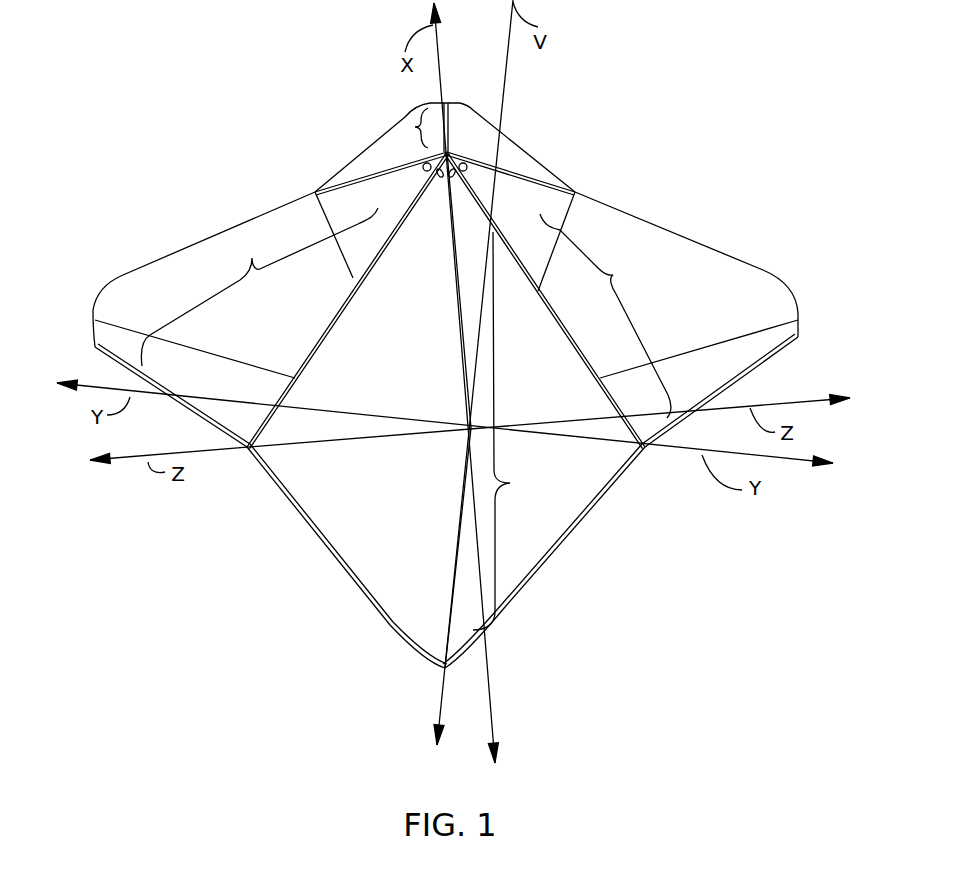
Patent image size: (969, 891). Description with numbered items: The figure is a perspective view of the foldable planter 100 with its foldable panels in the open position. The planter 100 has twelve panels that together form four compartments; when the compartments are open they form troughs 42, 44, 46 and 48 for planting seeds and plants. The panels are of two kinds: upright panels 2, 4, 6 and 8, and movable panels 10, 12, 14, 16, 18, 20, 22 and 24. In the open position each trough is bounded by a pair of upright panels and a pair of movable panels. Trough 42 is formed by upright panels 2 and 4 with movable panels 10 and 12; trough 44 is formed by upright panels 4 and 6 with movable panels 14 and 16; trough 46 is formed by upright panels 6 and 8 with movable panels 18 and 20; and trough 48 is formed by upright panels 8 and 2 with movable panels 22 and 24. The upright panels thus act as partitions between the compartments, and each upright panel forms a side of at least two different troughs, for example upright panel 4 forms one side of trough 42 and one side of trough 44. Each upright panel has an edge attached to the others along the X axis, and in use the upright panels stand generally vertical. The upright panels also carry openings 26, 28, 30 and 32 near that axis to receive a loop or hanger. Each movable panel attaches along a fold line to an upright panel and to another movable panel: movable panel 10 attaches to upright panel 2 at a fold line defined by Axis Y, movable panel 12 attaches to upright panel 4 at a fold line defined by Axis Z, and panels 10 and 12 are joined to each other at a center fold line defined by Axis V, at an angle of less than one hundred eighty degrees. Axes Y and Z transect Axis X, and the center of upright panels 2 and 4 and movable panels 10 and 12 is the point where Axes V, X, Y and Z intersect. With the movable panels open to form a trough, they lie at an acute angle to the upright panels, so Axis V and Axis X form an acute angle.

The planter 100 is at (184, 611).
The upright panel 2 is at (645, 425).
The upright panel 4 is at (290, 422).
The upright panel 6 is at (340, 198).
The upright panel 8 is at (568, 182).
The movable panel 10 is at (543, 538).
The movable panel 12 is at (353, 552).
The movable panel 14 is at (120, 340).
The movable panel 16 is at (162, 272).
The movable panel 18 is at (340, 170).
The movable panel 20 is at (507, 148).
The movable panel 22 is at (717, 287).
The movable panel 24 is at (733, 355).
The opening 26 is at (466, 165).
The opening 28 is at (413, 185).
The opening 30 is at (410, 158).
The opening 32 is at (478, 158).
The trough 42 is at (508, 431).
The trough 44 is at (259, 287).
The trough 46 is at (415, 128).
The trough 48 is at (605, 316).